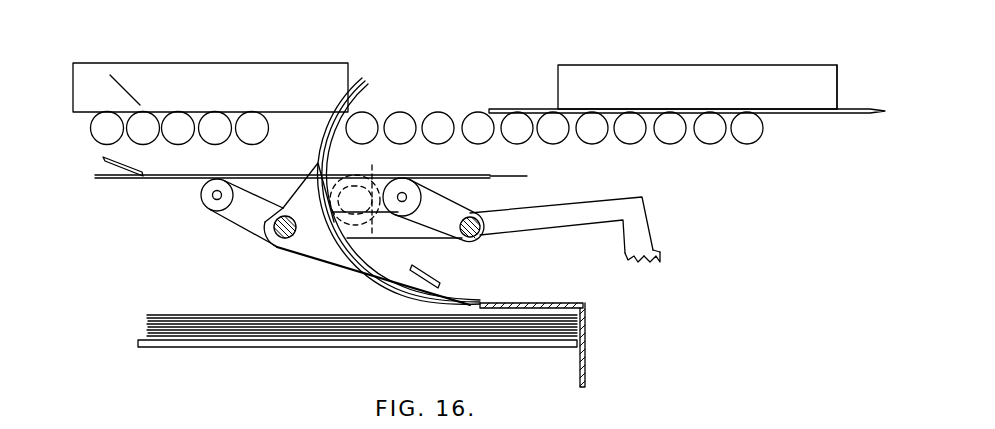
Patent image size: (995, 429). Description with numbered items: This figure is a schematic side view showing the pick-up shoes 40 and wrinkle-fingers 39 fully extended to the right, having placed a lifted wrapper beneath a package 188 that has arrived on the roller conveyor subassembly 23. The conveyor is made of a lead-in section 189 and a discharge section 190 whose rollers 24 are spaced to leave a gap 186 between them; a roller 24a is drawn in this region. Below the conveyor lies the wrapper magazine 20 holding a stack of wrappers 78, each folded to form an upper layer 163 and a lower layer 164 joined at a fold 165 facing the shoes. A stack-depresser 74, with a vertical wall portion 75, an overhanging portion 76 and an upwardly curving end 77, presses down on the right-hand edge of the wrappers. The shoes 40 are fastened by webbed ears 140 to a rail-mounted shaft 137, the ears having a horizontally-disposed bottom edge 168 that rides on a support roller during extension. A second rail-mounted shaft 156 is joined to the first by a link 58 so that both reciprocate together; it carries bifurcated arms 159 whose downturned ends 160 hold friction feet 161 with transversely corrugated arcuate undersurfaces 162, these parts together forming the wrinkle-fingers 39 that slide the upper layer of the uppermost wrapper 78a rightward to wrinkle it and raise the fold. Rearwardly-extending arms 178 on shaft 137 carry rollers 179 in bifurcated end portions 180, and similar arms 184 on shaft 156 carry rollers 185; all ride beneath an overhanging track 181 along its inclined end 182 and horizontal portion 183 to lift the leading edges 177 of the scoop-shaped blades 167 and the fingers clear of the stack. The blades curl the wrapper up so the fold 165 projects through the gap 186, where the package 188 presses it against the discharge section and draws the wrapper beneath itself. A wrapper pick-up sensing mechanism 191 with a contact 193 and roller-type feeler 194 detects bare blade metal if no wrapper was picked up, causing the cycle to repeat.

The wrapper magazine 20 is at (238, 306).
The roller conveyor subassembly 23 is at (454, 101).
The rollers 24 is at (218, 118).
The roller 24a is at (365, 122).
The wrinkle-fingers 39 is at (660, 257).
The pick-up shoes 40 is at (400, 275).
The rod 58 is at (412, 236).
The stack-depresser 74 is at (503, 303).
The vertical wall portion 75 is at (588, 352).
The overhanging portion 76 is at (556, 303).
The upwardly curving end 77 is at (447, 284).
The wrappers 78 is at (840, 108).
The uppermost wrapper 78a is at (362, 83).
The rail-mounted shaft 137 is at (276, 240).
The webbed ears 140 is at (312, 232).
The second rail-mounted shaft 156 is at (480, 228).
The bifurcated arms 159 is at (600, 208).
The downturned ends 160 is at (646, 232).
The friction feet 161 is at (636, 266).
The transversely corrugated arcuate undersurfaces 162 is at (627, 258).
The upper layer 163 is at (403, 290).
The lower layer 164 is at (326, 138).
The fold 165 is at (363, 90).
The scoop-shaped blades 167 is at (295, 172).
The horizontally-disposed bottom edge 168 is at (343, 273).
The leading edges 177 is at (452, 308).
The rearwardly-extending arms 178 is at (247, 217).
The rollers 179 is at (203, 195).
The bifurcated end portions 180 is at (217, 200).
The overhanging track 181 is at (148, 178).
The inclined end 182 is at (112, 174).
The horizontal portion 183 is at (472, 178).
The rearwardly-extending arms 184 is at (433, 207).
The rollers 185 is at (418, 180).
The gap 186 is at (288, 130).
The package 188 is at (200, 73).
The lead-in section 189 is at (148, 87).
The discharge section 190 is at (512, 101).
The wrapper pick-up sensing mechanism 191 is at (372, 176).
The contact 193 is at (368, 226).
The roller-type feeler 194 is at (334, 172).